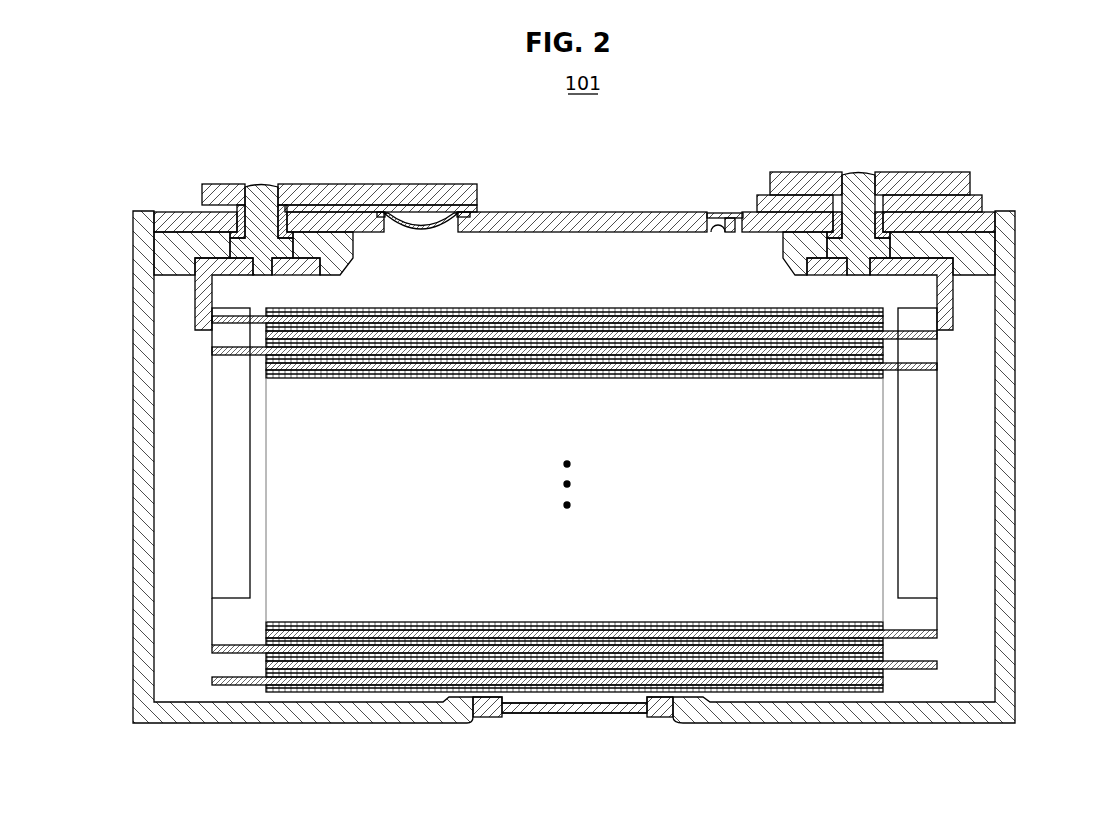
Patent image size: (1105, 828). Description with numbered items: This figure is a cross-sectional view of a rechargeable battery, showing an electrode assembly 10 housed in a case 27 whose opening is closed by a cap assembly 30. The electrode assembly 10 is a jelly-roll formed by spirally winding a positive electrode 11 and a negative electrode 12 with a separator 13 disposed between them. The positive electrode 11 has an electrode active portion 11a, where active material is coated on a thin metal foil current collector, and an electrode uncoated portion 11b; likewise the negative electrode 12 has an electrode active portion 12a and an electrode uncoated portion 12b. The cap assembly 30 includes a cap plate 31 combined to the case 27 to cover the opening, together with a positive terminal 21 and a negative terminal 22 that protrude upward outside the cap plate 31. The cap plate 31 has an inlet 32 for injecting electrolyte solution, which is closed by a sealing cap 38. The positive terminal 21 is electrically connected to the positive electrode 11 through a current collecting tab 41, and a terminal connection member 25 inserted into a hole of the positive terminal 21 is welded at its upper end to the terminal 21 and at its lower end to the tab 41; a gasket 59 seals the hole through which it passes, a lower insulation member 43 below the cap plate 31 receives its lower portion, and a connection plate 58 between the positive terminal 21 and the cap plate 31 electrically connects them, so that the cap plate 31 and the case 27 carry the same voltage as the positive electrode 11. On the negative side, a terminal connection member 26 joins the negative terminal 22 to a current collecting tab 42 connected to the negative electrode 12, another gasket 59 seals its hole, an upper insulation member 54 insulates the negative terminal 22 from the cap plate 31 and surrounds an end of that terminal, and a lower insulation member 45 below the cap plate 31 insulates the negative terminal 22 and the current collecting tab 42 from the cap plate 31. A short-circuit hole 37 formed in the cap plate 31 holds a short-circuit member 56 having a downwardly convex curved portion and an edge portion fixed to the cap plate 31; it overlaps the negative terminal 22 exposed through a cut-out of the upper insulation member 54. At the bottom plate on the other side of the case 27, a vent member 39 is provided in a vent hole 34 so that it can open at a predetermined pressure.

The electrode assembly 10 is at (574, 564).
The positive electrode 11 is at (601, 575).
The electrode active portion 11a is at (925, 780).
The electrode uncoated portion 11b is at (915, 670).
The negative electrode 12 is at (547, 568).
The electrode active portion 12a is at (318, 685).
The electrode uncoated portion 12b is at (230, 681).
The separator 13 is at (425, 655).
The positive terminal 21 is at (895, 182).
The negative terminal 22 is at (222, 183).
The terminal connection member 25 is at (857, 185).
The terminal connection member 26 is at (258, 183).
The case 27 is at (1005, 510).
The cap assembly 30 is at (582, 196).
The cap plate 31 is at (978, 217).
The inlet 32 is at (715, 256).
The vent hole 34 is at (667, 718).
The short-circuit hole 37 is at (398, 210).
The sealing cap 38 is at (722, 211).
The vent member 39 is at (488, 717).
The current collecting tab 41 is at (922, 350).
The current collecting tab 42 is at (228, 412).
The lower insulation member 43 is at (973, 253).
The lower insulation member 45 is at (170, 254).
The upper insulation member 54 is at (333, 205).
The short-circuit member 56 is at (423, 226).
The connection plate 58 is at (920, 203).
The gasket 59 is at (835, 225).